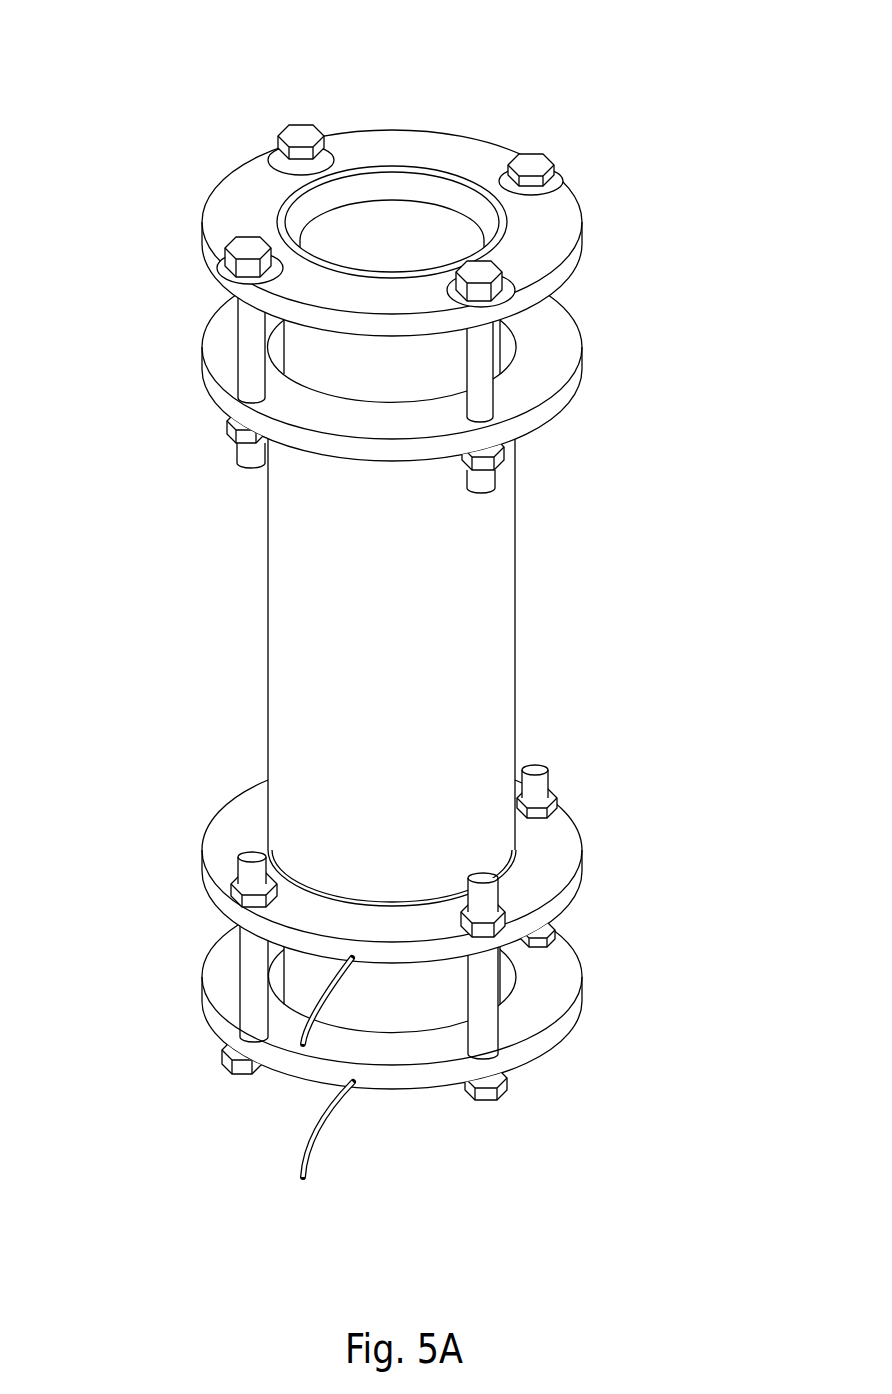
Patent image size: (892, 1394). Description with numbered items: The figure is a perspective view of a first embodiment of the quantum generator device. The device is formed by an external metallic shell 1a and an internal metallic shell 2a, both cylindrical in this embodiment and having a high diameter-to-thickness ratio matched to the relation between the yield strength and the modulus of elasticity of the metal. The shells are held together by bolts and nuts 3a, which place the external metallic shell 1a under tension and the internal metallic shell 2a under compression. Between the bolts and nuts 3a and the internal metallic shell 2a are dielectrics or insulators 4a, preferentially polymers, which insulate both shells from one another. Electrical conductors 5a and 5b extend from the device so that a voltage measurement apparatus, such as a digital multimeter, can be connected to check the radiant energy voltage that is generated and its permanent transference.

The external metallic shell 1a is at (482, 655).
The internal metallic shell 2a is at (413, 367).
The bolts and nuts 3a is at (303, 137).
The dielectrics or insulators 4a is at (560, 178).
The electrical conductor 5a is at (303, 1036).
The electrical conductor 5b is at (303, 1164).